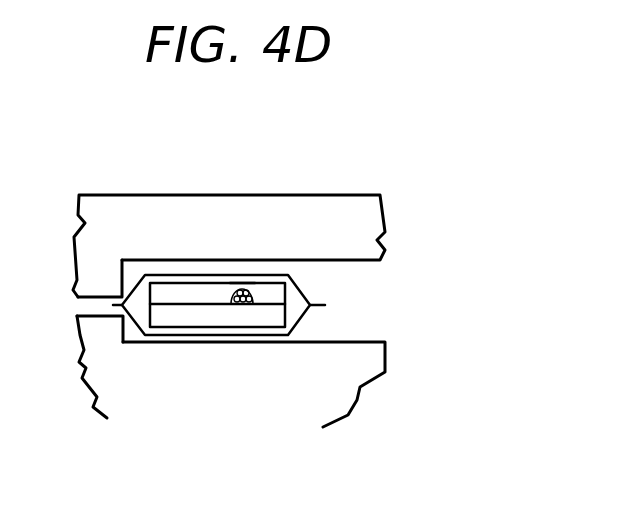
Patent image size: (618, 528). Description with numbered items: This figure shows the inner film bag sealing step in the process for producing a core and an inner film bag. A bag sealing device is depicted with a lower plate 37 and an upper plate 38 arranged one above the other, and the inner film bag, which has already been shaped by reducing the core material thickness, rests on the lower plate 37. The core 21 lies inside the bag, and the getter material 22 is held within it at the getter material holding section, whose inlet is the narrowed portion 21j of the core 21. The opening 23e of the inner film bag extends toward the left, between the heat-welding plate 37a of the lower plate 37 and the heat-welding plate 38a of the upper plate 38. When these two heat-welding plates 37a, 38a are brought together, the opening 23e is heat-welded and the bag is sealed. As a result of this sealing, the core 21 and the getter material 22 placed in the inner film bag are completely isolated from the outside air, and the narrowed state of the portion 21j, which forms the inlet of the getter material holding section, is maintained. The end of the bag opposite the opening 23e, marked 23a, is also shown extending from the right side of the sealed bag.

The upper plate 38 is at (322, 195).
The heat-welding plate 38a is at (100, 287).
The lower plate 37 is at (347, 415).
The heat-welding plate 37a is at (93, 318).
The right end stub of cartridge 23a is at (303, 290).
The opening 23e is at (115, 307).
The core 21 is at (180, 317).
The portion 21j is at (235, 290).
The getter material 22 is at (236, 305).